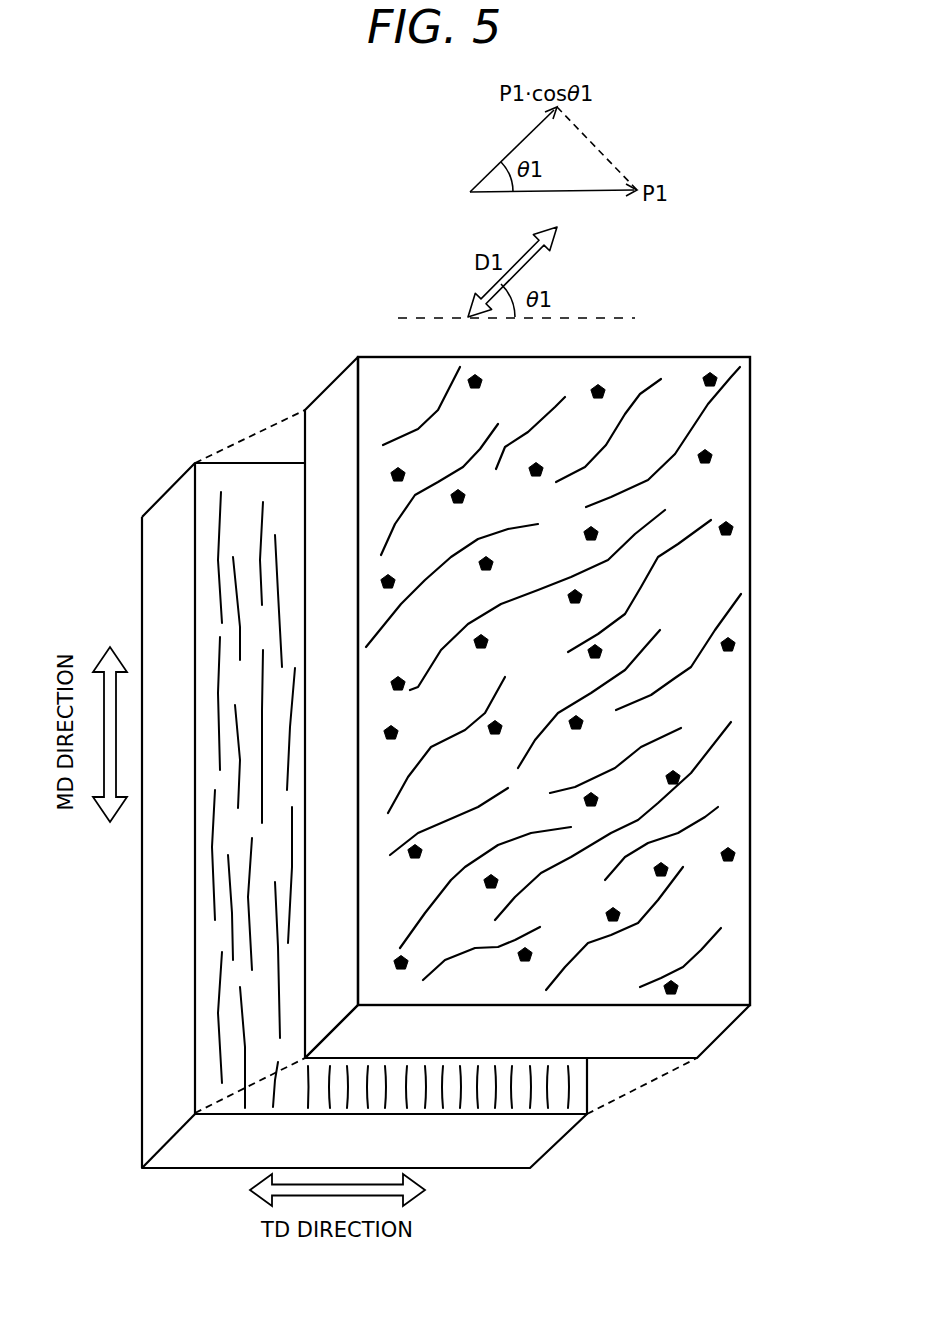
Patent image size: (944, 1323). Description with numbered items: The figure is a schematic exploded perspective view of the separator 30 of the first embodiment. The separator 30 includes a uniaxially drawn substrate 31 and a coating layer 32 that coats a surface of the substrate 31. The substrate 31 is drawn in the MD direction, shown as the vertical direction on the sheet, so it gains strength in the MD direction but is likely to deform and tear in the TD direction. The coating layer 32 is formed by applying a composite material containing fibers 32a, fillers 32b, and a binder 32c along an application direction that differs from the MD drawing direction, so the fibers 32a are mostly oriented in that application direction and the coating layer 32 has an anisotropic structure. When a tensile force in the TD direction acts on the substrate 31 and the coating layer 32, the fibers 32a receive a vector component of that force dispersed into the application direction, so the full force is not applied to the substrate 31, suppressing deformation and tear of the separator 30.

The separator 30 is at (244, 329).
The substrate 31 is at (175, 513).
The coating layer 32 is at (333, 408).
The fibers 32a is at (640, 390).
The fillers 32b is at (712, 455).
The binder 32c is at (725, 568).